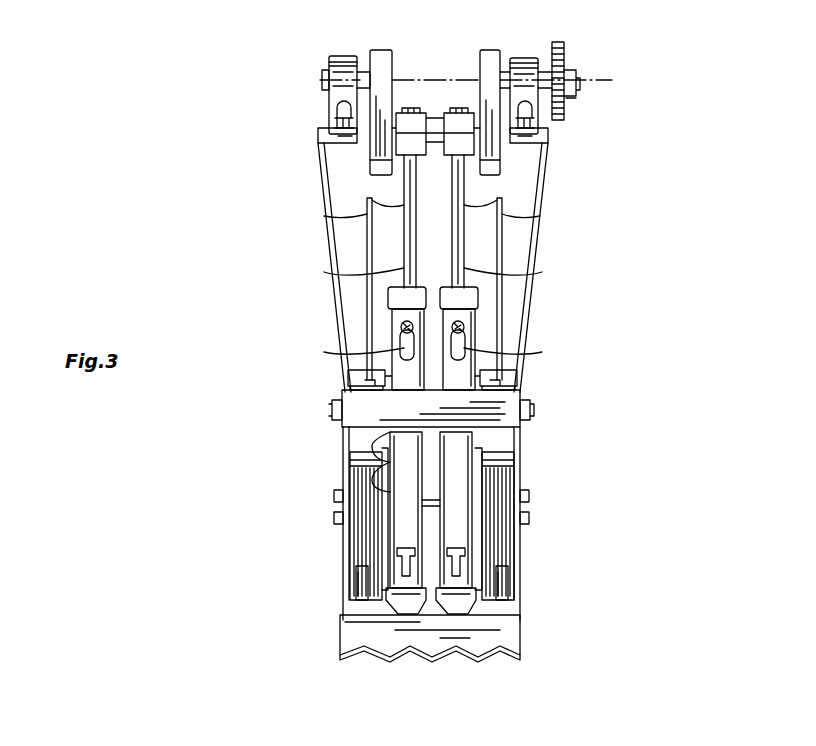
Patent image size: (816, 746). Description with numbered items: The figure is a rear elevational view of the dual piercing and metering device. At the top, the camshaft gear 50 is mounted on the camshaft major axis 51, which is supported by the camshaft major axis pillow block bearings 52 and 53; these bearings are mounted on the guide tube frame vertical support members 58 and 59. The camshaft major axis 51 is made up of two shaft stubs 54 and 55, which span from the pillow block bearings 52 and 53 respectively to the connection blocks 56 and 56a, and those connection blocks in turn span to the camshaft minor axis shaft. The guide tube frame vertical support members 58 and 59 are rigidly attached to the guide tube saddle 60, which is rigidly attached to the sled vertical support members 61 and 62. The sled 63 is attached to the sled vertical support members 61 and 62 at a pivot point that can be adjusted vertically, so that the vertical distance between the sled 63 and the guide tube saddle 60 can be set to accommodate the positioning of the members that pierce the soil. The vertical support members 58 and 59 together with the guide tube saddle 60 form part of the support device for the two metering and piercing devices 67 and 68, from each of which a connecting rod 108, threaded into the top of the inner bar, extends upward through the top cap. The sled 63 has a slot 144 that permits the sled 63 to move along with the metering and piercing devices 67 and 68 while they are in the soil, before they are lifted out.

The camshaft gear 50 is at (565, 48).
The camshaft major axis 51 is at (612, 80).
The camshaft major axis pillow block bearing 52 is at (556, 44).
The camshaft major axis pillow block bearing 53 is at (329, 59).
The shaft stub 54 is at (580, 96).
The shaft stub 55 is at (322, 88).
The connection block 56 is at (392, 52).
The connection block 56a is at (500, 52).
The guide tube frame vertical support member 58 is at (540, 216).
The guide tube frame vertical support member 59 is at (322, 214).
The guide tube saddle 60 is at (518, 392).
The sled vertical support member 61 is at (520, 468).
The sled vertical support member 62 is at (343, 462).
The sled 63 is at (520, 630).
The metering and piercing device 67 is at (480, 345).
The metering and piercing device 68 is at (388, 375).
The connecting rod 108 is at (404, 270).
The slot 144 is at (210, 3).